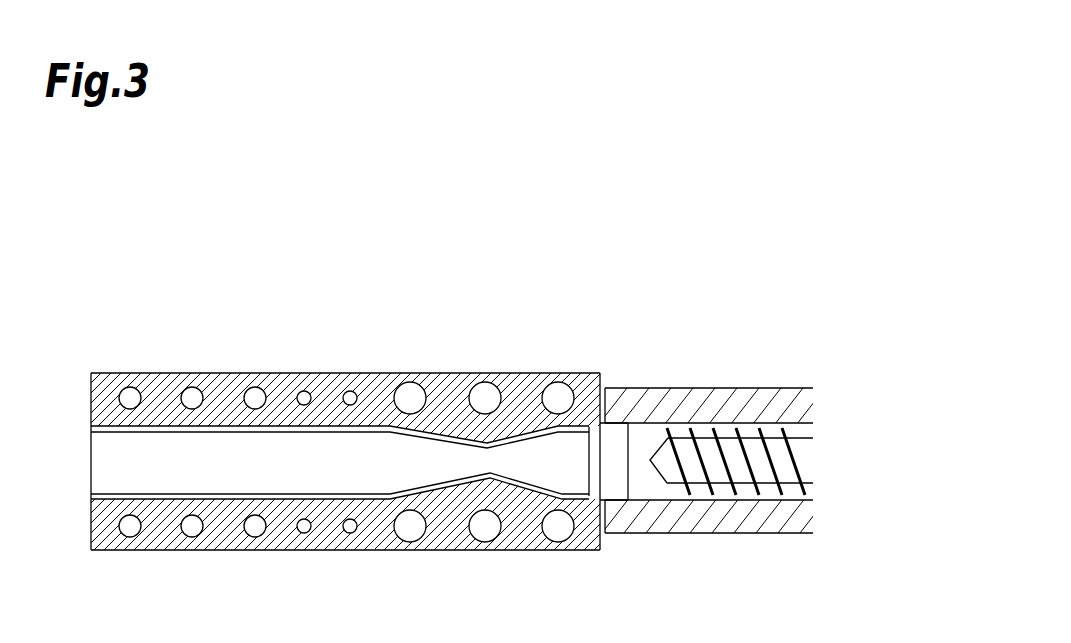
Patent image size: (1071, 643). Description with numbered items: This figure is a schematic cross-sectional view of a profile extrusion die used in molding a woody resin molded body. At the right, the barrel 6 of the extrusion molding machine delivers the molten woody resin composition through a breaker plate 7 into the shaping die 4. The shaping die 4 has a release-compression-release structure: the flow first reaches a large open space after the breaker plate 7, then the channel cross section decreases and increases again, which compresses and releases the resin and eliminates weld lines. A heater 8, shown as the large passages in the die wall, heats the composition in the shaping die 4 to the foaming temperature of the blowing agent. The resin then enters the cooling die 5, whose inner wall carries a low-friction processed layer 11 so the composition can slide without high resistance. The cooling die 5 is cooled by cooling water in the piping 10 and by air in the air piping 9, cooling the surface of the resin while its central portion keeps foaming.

The shaping die 4 is at (600, 555).
The cooling die 5 is at (91, 555).
The barrel of extrusion molding machine 6 is at (723, 402).
The breaker plate 7 is at (615, 437).
The heater 8 is at (481, 395).
The air piping for air cooling the die 9 is at (350, 395).
The piping for water cooling the die 10 is at (188, 396).
The low-friction processed layer of inner wall of the die 11 is at (122, 499).